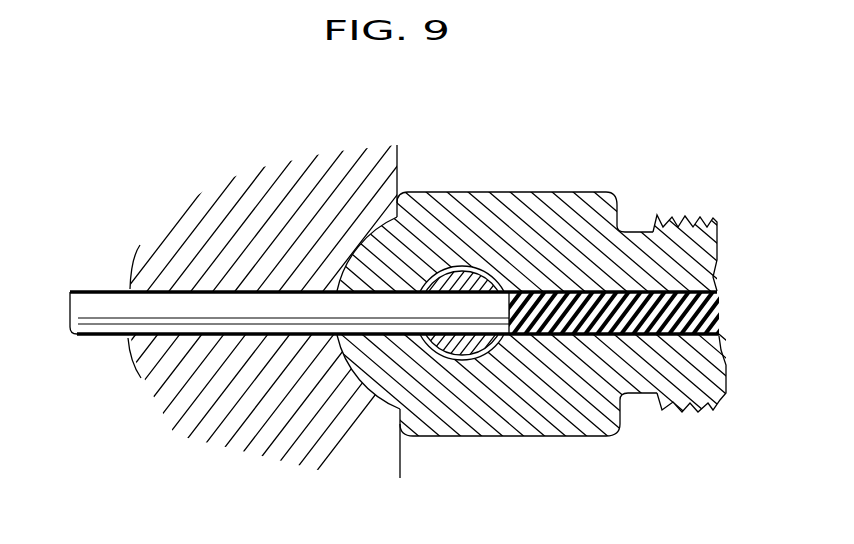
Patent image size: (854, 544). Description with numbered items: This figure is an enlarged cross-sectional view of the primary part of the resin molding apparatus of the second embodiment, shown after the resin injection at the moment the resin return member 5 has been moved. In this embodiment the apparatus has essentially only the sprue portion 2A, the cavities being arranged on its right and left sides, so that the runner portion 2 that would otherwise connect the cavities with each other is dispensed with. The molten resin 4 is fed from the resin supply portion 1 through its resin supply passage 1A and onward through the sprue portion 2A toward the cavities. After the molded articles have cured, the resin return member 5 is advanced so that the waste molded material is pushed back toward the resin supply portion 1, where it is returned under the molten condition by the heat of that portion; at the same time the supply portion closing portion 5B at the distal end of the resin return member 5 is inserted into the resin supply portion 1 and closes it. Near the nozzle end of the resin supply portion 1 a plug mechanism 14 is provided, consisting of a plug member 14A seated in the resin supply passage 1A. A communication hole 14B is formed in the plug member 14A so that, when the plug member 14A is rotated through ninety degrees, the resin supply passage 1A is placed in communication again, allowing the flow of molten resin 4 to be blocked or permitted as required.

The resin supply portion 1 is at (452, 192).
The resin supply passage 1A is at (618, 287).
The runner portion 2 is at (212, 291).
The sprue portion 2A is at (168, 292).
The molten resin 4 is at (717, 288).
The resin return member 5 is at (117, 337).
The supply portion closing portion 5B is at (510, 337).
The plug mechanism 14 is at (478, 265).
The plug member 14A is at (488, 275).
The communication hole 14B is at (465, 363).